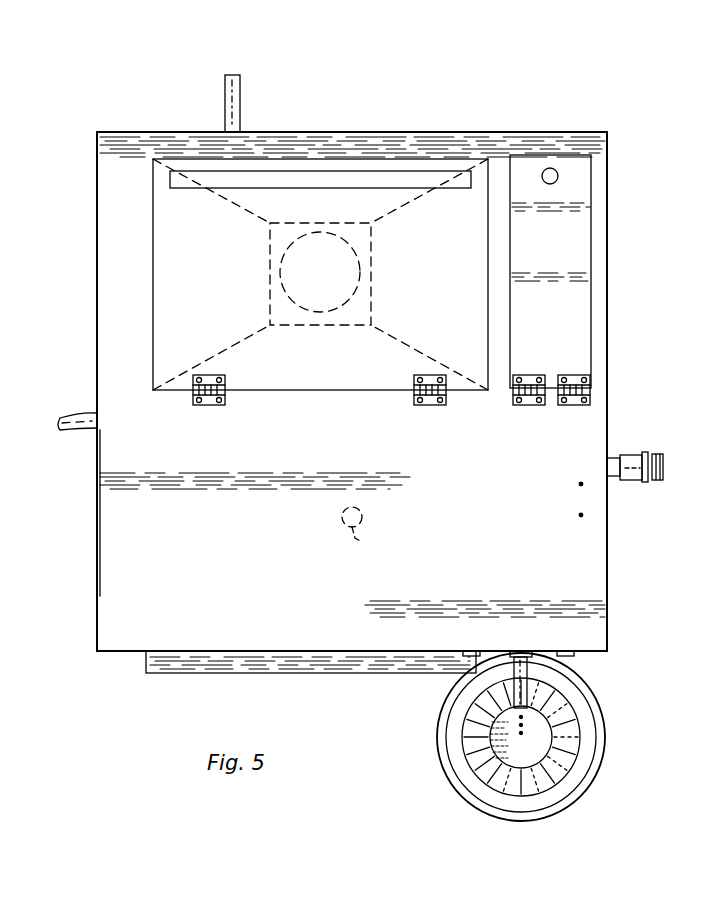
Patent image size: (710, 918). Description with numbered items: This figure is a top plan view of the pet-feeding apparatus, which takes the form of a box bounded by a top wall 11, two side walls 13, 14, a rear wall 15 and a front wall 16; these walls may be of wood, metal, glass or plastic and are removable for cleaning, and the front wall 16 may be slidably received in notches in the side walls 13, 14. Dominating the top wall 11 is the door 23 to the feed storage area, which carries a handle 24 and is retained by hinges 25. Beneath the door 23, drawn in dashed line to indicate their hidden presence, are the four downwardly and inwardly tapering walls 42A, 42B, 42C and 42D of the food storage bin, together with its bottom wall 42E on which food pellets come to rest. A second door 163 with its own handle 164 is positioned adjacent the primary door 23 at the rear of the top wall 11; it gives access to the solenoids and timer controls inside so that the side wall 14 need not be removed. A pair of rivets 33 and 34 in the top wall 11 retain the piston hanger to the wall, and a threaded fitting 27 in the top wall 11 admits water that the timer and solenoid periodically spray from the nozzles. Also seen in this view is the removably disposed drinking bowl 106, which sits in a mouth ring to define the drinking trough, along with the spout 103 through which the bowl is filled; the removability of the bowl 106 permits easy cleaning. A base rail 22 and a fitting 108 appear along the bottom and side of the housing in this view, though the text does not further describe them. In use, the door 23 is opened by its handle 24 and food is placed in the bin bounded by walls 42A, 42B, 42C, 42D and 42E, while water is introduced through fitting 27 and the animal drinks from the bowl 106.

The top wall 11 is at (187, 564).
The side wall 13 is at (97, 338).
The side wall 14 is at (607, 320).
The rear wall 15 is at (190, 132).
The front wall 16 is at (122, 651).
The base frame bar 22 is at (257, 665).
The door 23 is at (165, 218).
The handle 24 is at (293, 178).
The hinges 25 is at (204, 405).
The fitting 27 is at (366, 538).
The rivet 33 is at (579, 484).
The rivet 34 is at (579, 515).
The wall of food storage bin 42A is at (225, 267).
The wall of food storage bin 42B is at (335, 210).
The wall of food storage bin 42C is at (445, 274).
The wall of food storage bin 42D is at (345, 370).
The bottom wall of hopper 42E is at (284, 310).
The spout 103 is at (520, 680).
The drinking bowl 106 is at (447, 778).
The fitting 108 is at (634, 480).
The second door 163 is at (575, 240).
The handle 164 is at (558, 176).